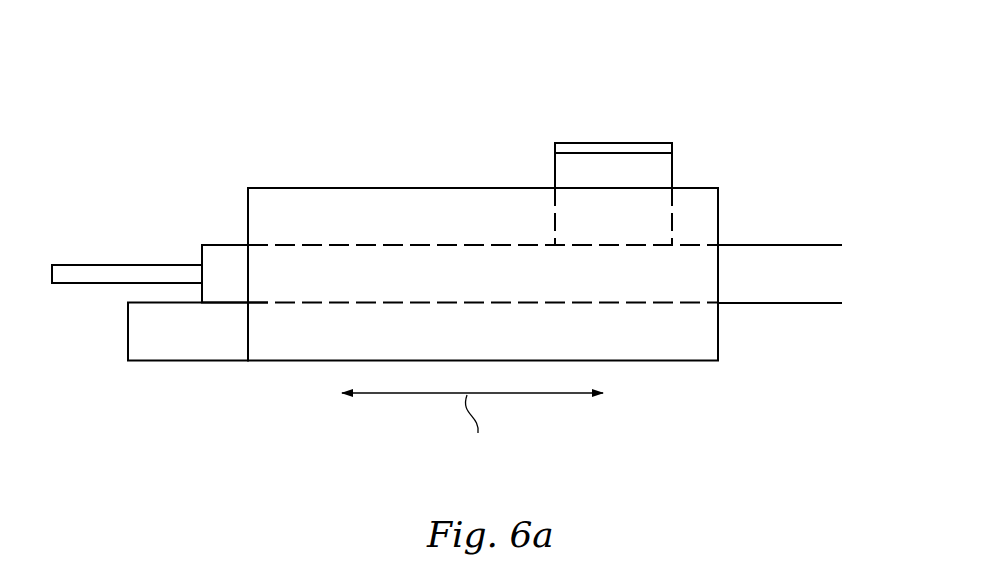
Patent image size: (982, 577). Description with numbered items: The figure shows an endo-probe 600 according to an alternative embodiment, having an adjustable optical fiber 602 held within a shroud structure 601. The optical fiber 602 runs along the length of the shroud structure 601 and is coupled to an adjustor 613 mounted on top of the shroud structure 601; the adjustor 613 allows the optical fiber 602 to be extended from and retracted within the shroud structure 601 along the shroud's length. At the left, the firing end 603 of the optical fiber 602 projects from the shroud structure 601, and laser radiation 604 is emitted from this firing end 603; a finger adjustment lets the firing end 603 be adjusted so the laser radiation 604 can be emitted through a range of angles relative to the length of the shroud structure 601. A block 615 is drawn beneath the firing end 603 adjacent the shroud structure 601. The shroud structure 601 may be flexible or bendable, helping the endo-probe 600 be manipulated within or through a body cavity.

The endo-probe 600 is at (140, 125).
The shroud structure 601 is at (440, 188).
The optical fiber 602 is at (775, 245).
The firing end 603 is at (199, 258).
The laser radiation 604 is at (95, 265).
The adjustor 613 is at (605, 142).
The lower base block 615 is at (188, 352).